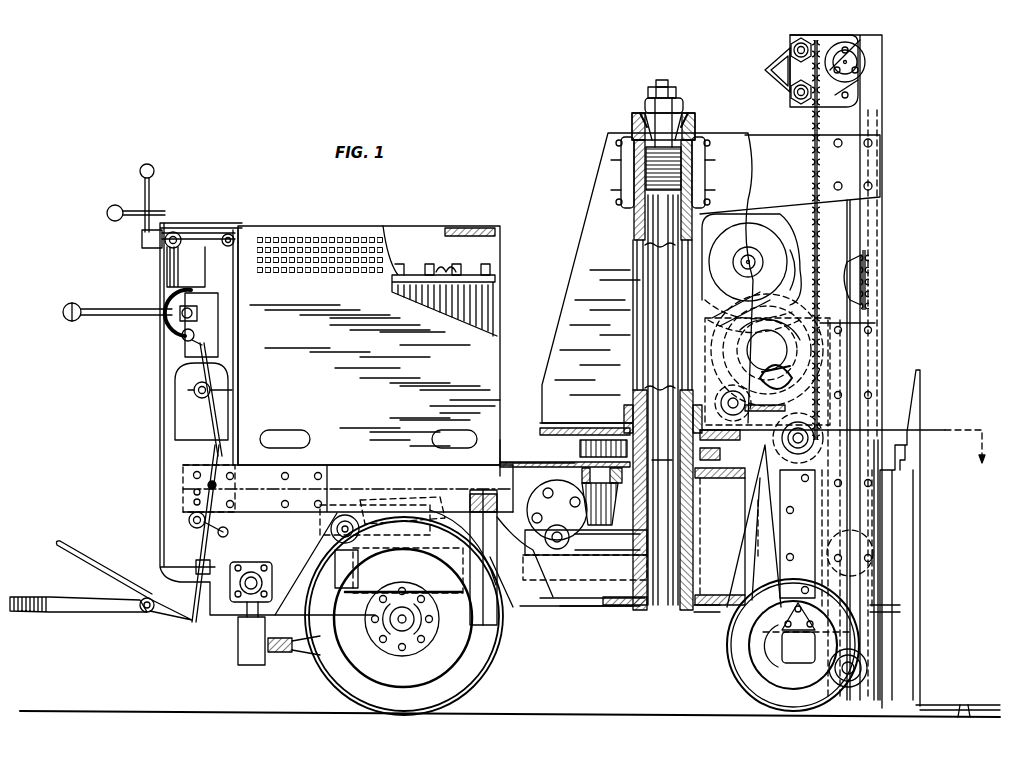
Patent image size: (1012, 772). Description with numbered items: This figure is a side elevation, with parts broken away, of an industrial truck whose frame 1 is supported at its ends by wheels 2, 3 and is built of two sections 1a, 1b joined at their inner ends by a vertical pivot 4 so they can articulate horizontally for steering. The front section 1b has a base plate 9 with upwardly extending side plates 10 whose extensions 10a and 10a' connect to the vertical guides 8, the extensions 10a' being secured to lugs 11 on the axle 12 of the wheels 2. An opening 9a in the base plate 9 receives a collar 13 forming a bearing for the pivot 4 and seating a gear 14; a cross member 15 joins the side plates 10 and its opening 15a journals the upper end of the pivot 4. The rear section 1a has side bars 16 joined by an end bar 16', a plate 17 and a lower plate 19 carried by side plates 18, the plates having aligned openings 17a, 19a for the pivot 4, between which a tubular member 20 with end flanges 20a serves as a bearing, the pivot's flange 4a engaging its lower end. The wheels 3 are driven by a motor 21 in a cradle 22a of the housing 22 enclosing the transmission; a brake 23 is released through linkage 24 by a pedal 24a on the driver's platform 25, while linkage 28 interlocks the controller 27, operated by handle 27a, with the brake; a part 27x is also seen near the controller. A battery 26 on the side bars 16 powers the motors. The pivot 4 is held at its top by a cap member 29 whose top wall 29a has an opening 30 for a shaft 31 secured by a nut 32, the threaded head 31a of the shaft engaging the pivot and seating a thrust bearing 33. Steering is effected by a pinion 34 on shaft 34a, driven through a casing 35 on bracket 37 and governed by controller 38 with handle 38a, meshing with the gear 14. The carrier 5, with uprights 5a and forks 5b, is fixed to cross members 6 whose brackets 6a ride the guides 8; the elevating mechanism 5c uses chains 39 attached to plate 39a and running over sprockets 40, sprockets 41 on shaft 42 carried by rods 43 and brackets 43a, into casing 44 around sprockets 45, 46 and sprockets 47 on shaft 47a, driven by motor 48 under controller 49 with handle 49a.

The frame 1 is at (592, 617).
The frame section 1a is at (508, 466).
The frame section 1b is at (757, 530).
The wheels 2 is at (730, 651).
The wheels 3 is at (470, 660).
The pivot 4 is at (261, 520).
The flange 4a is at (690, 610).
The carrier 5 is at (958, 659).
The upright members 5a is at (916, 553).
The forks 5b is at (944, 707).
The elevating mechanism 5c is at (795, 259).
The cross members 6 is at (900, 505).
The brackets 6a is at (873, 473).
The guides 8 is at (884, 223).
The base plate 9 is at (572, 428).
The opening 9a is at (620, 412).
The side plates 10 is at (572, 300).
The extensions 10a is at (790, 305).
The extensions 10a' is at (756, 539).
The lugs 11 is at (782, 609).
The axle 12 is at (798, 663).
The collar 13 is at (640, 402).
The operating element 14 is at (754, 452).
The cross member 15 is at (621, 166).
The opening 15a is at (705, 172).
The side bars 16 is at (369, 346).
The end bar 16' is at (173, 488).
The plate 17 is at (542, 470).
The opening 17a is at (664, 474).
The side plates 18 is at (548, 602).
The plate 19 is at (608, 608).
The opening 19a is at (638, 608).
The tubular member 20 is at (695, 528).
The flanges 20a is at (715, 478).
The motor 21 is at (215, 626).
The housing 22 is at (440, 660).
The cradle 22a is at (292, 655).
The brake mechanism 23 is at (485, 545).
The linkage 24 is at (355, 492).
The pedal 24a is at (92, 568).
The driver's platform 25 is at (75, 608).
The battery 26 is at (490, 290).
The controller 27 is at (178, 348).
The handle 27a is at (110, 318).
The pin 27x is at (203, 331).
The linkage 28 is at (226, 420).
The cap member 29 is at (694, 119).
The top wall 29a is at (640, 116).
The opening 30 is at (655, 103).
The shaft 31 is at (684, 108).
The head 31a is at (658, 192).
The nut 32 is at (677, 90).
The tapered roller thrust bearing 33 is at (632, 121).
The pinion 34 is at (578, 467).
The shaft 34a is at (548, 490).
The casing 35 is at (602, 548).
The bracket 37 is at (578, 572).
The controller 38 is at (175, 264).
The handle 38a is at (114, 205).
The sprocket chains 39 is at (870, 292).
The plate 39a is at (890, 610).
The sprockets 40 is at (875, 664).
The sprockets 41 is at (862, 82).
The shaft 42 is at (852, 44).
The rods 43 is at (801, 38).
The brackets 43a is at (781, 58).
The casing 44 is at (805, 377).
The sprockets 45 is at (800, 396).
The sprockets 46 is at (767, 350).
The sprockets 47 is at (818, 460).
The shaft 47a is at (804, 436).
The motor 48 is at (756, 240).
The controller 49 is at (172, 428).
The handle 49a is at (150, 196).